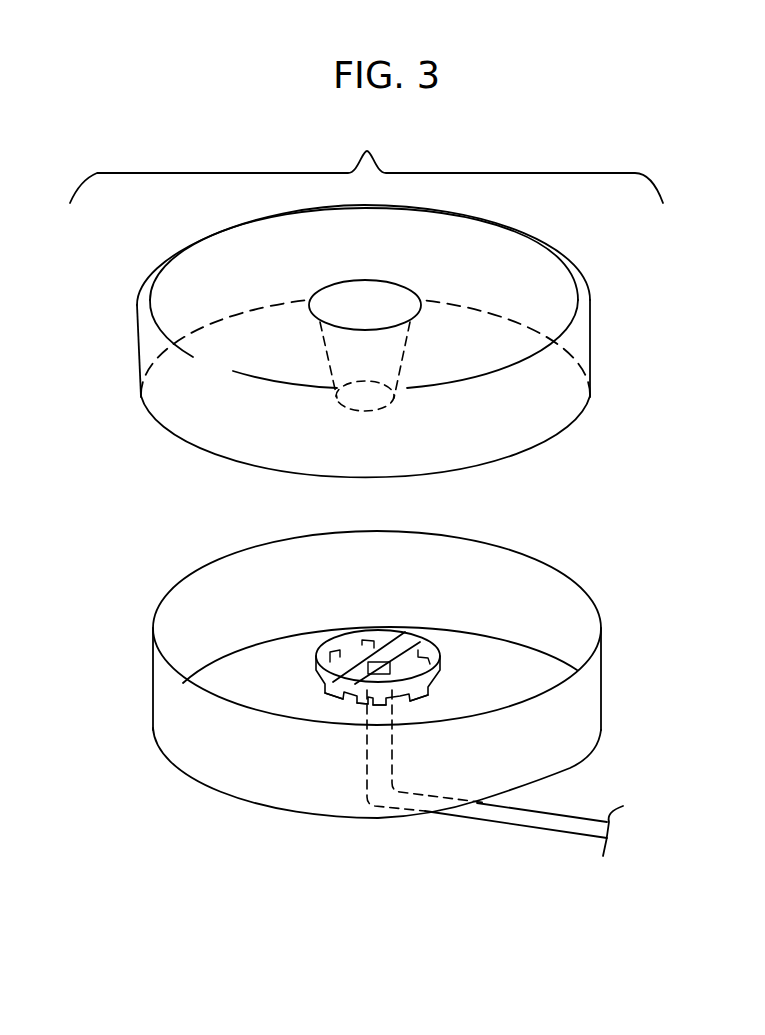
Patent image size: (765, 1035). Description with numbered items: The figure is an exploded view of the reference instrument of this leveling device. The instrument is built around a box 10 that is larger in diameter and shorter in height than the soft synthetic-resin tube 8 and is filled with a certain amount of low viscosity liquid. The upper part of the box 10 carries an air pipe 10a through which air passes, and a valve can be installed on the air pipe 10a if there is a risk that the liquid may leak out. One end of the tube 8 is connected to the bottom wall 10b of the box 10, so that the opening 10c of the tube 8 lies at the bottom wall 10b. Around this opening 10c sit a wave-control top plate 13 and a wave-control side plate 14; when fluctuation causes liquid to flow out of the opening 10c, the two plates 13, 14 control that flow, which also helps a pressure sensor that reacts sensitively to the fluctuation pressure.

The tube 8 is at (563, 825).
The box 10 is at (595, 460).
The air pipe 10a is at (403, 345).
The bottom wall 10b is at (260, 683).
The opening 10c is at (390, 668).
The wave-control top plate 13 is at (410, 638).
The wave-control side plate 14 is at (447, 690).